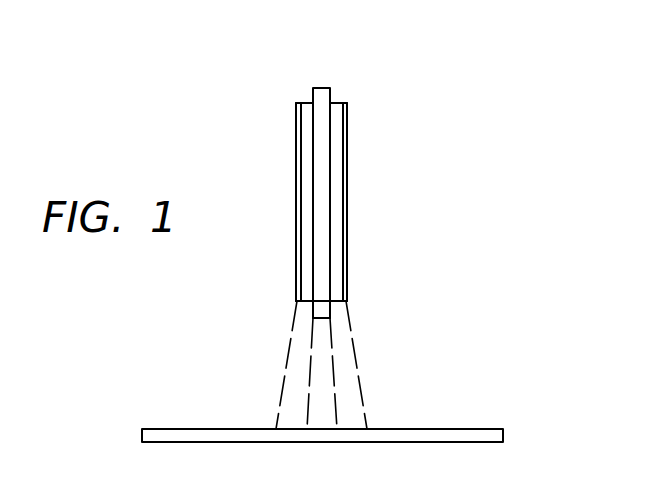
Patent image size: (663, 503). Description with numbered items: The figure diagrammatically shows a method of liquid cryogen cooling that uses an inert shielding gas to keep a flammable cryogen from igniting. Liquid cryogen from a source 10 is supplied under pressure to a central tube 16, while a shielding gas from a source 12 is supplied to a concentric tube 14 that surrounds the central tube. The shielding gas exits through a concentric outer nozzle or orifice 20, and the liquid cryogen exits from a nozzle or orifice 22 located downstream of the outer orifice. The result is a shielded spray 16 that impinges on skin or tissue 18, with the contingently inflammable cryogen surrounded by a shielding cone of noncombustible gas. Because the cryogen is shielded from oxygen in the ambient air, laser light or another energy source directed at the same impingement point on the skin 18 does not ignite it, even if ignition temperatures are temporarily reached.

The liquid cryogen source 10 is at (313, 88).
The shielding gas source 12 is at (347, 103).
The concentric tube 14 is at (347, 272).
The central tube 16 is at (329, 88).
The skin or tissue 18 is at (465, 430).
The concentric outer nozzle or orifice 20 is at (300, 302).
The nozzle or orifice 22 is at (315, 318).